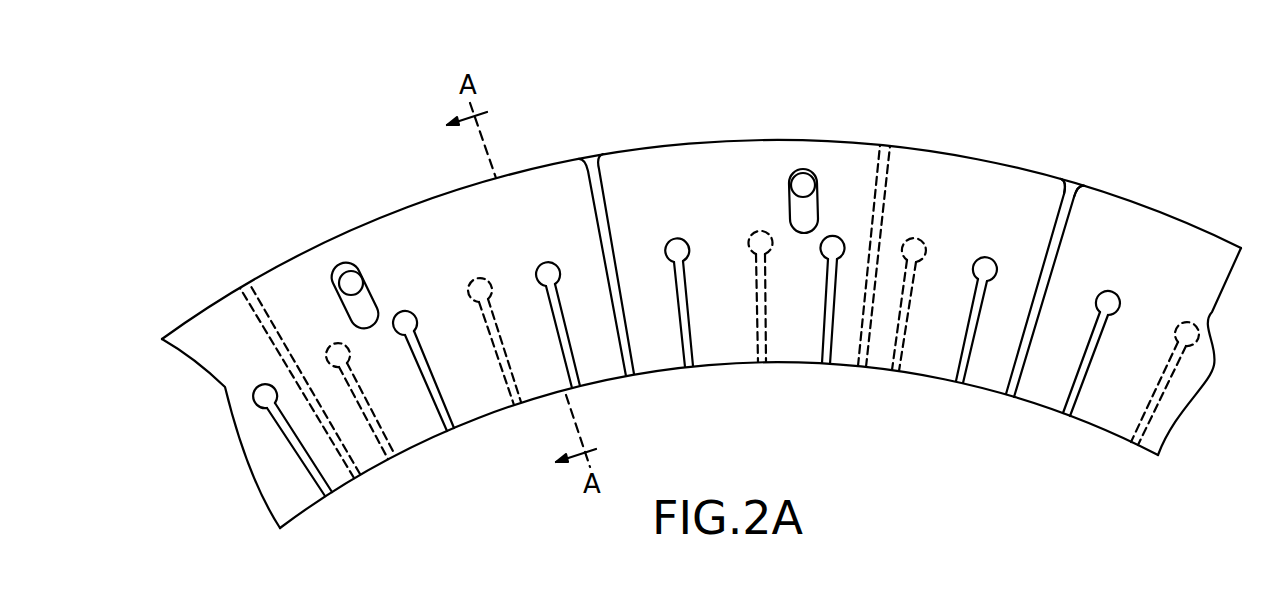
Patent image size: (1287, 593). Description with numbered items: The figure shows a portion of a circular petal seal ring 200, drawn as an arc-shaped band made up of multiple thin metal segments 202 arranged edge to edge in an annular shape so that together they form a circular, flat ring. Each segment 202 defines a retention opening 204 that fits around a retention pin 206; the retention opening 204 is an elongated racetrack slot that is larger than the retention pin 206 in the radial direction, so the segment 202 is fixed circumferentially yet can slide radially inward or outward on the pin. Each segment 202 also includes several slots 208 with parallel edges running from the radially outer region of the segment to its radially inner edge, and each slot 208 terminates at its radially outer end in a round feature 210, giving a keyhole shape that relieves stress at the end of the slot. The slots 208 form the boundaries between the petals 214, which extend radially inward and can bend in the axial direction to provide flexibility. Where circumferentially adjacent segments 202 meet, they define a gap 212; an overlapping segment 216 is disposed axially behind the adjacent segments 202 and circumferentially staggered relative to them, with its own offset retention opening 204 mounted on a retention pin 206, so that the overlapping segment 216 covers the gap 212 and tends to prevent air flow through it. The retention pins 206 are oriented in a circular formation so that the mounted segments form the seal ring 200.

The seal ring 200 is at (284, 127).
The segment 202 is at (305, 290).
The retention opening 204 is at (355, 280).
The retention pin 206 is at (348, 265).
The slot 208 is at (437, 407).
The round feature 210 is at (405, 320).
The gap 212 is at (1068, 184).
The petal 214 is at (297, 497).
The overlapping segment 216 is at (595, 187).